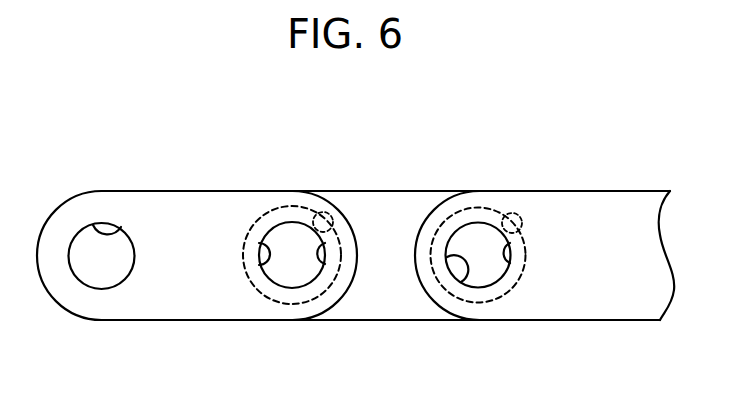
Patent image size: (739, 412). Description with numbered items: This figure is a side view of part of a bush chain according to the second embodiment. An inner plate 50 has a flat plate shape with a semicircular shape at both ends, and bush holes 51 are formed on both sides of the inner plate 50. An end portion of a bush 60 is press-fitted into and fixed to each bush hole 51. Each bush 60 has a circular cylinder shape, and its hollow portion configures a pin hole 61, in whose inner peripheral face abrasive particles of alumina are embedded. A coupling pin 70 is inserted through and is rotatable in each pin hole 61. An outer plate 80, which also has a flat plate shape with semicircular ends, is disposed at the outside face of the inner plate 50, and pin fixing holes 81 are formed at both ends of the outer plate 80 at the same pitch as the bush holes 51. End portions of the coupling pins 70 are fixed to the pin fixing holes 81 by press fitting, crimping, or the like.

The inner plate 50 is at (383, 303).
The bush hole 51 is at (333, 214).
The bush 60 is at (293, 206).
The pin hole 61 is at (258, 247).
The coupling pin 70 is at (295, 272).
The outer plate 80 is at (180, 302).
The pin fixing hole 81 is at (118, 230).